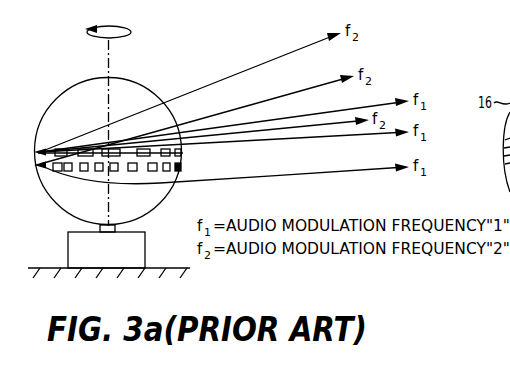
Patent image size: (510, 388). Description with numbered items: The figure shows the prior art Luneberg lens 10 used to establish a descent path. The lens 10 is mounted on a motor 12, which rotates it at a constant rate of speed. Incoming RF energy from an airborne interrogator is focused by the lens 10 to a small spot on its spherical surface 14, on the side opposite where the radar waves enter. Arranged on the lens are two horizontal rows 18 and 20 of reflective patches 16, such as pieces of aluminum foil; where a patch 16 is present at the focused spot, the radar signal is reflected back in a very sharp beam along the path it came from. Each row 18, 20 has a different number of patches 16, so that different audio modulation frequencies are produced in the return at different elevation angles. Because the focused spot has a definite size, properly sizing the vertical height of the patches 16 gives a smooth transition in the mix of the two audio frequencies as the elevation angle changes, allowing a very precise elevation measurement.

The Luneberg lens 10 is at (188, 34).
The motor 12 is at (68, 242).
The spherical surface 14 is at (152, 80).
The reflective patches 16 is at (56, 172).
The first horizontal row of patches 18 is at (186, 153).
The second horizontal row of patches 20 is at (186, 168).